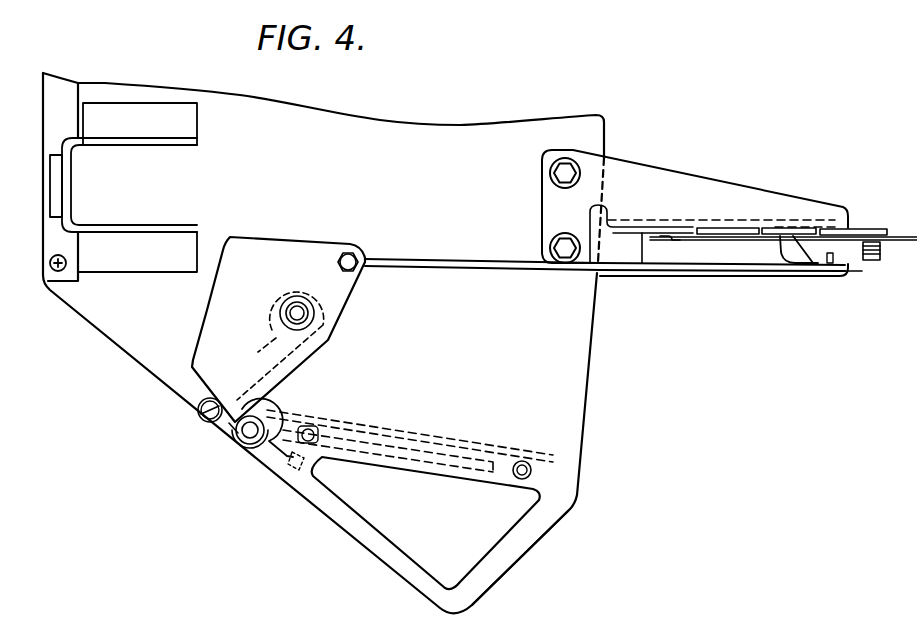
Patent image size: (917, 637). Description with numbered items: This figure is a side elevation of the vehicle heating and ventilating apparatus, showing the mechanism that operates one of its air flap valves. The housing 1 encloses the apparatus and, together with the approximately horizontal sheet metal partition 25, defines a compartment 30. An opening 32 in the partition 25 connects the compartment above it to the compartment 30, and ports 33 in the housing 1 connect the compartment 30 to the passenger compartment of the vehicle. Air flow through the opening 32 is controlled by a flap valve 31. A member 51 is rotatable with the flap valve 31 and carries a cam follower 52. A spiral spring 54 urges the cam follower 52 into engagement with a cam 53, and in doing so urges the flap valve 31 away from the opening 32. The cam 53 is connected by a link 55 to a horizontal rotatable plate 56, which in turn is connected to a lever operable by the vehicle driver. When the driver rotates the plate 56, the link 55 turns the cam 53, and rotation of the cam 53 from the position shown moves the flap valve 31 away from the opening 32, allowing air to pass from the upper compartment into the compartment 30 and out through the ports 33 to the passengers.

The housing 1 is at (583, 315).
The horizontal sheet metal partition 25 is at (530, 455).
The compartment 30 is at (444, 523).
The flap valve 31 is at (415, 445).
The opening 32 is at (355, 428).
The ports 33 is at (503, 548).
The member 51 is at (226, 426).
The cam follower 52 is at (203, 418).
The cam 53 is at (204, 311).
The spiral spring 54 is at (248, 457).
The link 55 is at (697, 274).
The horizontal rotatable plate 56 is at (781, 255).